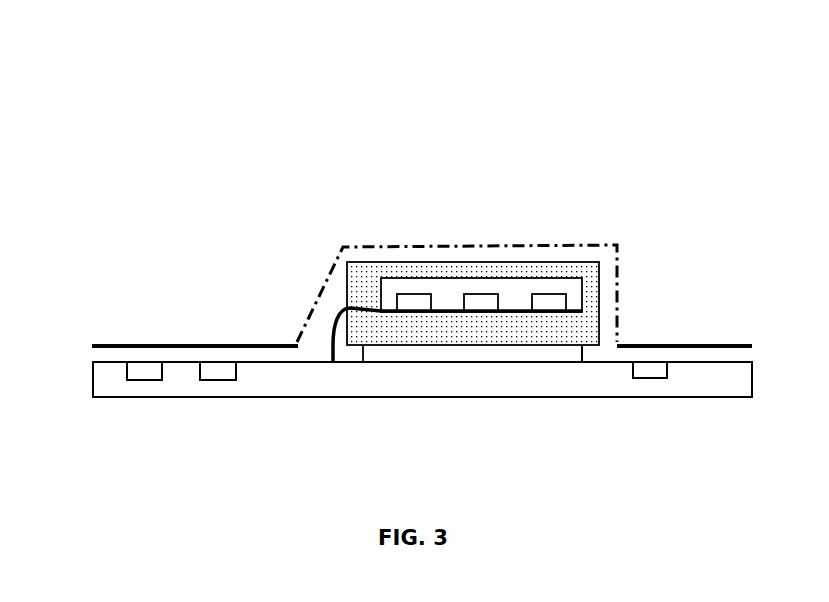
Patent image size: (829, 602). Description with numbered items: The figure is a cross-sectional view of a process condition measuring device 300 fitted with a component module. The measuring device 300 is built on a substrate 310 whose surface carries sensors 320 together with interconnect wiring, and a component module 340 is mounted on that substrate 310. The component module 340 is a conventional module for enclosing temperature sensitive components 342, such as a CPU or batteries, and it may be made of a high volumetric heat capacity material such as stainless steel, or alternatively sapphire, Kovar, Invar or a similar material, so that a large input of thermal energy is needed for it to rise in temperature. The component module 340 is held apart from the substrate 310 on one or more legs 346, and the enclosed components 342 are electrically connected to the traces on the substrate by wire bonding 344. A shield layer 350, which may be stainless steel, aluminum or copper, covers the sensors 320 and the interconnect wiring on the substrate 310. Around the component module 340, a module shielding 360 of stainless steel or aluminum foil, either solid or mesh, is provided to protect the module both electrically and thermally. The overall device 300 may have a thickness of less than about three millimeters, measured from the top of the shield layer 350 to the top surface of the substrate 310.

The measuring device 300 is at (90, 76).
The substrate 310 is at (404, 391).
The sensors 320 is at (212, 380).
The component module 340 is at (602, 278).
The temperature sensitive components 342 is at (515, 312).
The wire bonding 344 is at (333, 343).
The legs 346 is at (583, 361).
The shield layer 350 is at (146, 345).
The module shielding 360 is at (397, 245).